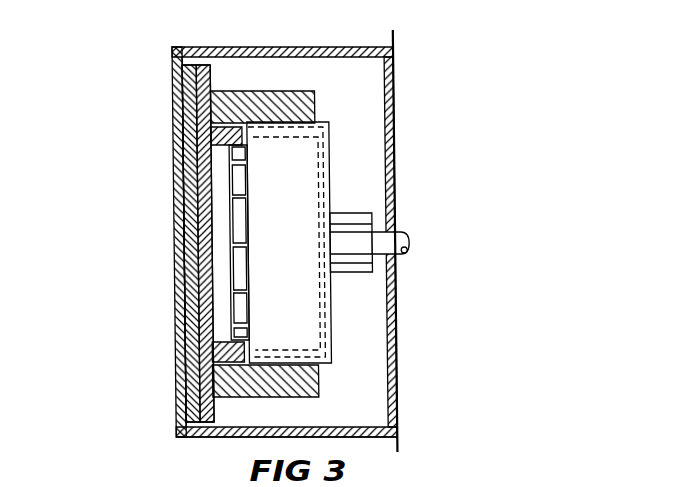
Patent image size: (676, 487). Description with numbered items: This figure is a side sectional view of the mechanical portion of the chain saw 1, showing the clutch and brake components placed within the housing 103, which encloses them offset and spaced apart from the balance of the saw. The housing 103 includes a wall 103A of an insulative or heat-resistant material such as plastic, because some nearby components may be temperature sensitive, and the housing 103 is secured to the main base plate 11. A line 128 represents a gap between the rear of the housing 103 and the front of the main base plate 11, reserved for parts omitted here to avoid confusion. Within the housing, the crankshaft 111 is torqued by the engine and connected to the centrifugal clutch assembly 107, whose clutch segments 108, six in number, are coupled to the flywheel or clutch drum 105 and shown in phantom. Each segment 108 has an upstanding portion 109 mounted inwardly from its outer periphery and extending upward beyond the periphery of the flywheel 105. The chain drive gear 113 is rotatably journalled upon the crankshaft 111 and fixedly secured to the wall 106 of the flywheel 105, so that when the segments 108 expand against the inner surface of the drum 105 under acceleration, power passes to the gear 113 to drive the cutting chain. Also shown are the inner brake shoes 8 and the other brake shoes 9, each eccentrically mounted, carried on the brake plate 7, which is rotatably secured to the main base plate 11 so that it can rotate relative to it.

The chain saw 1 is at (398, 445).
The brake plate 7 is at (191, 167).
The inner brake shoes 8 is at (204, 131).
The other brake shoes 9 is at (190, 91).
The main base plate 11 is at (188, 200).
The housing 103 is at (294, 46).
The wall 103A is at (388, 95).
The flywheel or clutch drum 105 is at (329, 143).
The wall 106 is at (329, 328).
The clutch assembly 107 is at (322, 157).
The clutch segments 108 is at (282, 133).
The upstanding portion 109 is at (230, 263).
The crankshaft 111 is at (408, 243).
The chain drive gear 113 is at (350, 277).
The gap line 128 is at (176, 417).